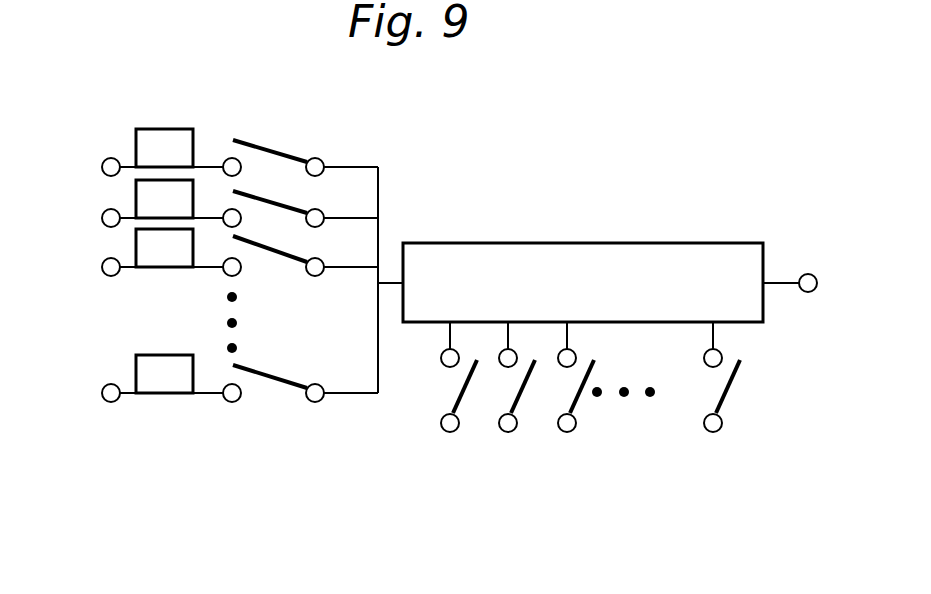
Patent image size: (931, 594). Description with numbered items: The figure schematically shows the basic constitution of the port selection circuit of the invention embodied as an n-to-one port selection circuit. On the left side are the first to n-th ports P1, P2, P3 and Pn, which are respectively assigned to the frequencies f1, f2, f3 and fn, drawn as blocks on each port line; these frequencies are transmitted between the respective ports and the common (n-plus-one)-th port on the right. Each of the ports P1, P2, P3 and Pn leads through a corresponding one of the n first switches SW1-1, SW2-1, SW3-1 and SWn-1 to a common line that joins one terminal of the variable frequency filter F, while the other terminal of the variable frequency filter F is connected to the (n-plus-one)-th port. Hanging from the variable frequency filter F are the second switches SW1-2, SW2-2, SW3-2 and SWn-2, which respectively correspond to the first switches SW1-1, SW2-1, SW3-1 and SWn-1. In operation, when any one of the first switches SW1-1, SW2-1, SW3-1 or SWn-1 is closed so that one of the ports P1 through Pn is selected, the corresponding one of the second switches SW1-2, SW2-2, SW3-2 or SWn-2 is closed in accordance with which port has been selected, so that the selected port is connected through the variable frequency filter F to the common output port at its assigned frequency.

The first port P1 is at (102, 167).
The second port P2 is at (102, 218).
The third port P3 is at (102, 267).
The n-th port Pn is at (102, 393).
The frequency assigned to first port f1 is at (164, 148).
The frequency assigned to second port f2 is at (164, 199).
The frequency assigned to third port f3 is at (164, 248).
The frequency assigned to n-th port fn is at (164, 374).
The first switch SW1-1 is at (247, 141).
The first switch SW2-1 is at (250, 192).
The first switch SW3-1 is at (280, 253).
The first switch SWn-1 is at (258, 368).
The variable frequency filter F is at (543, 243).
The second switch SW1-2 is at (463, 403).
The second switch SW2-2 is at (517, 403).
The second switch SW3-2 is at (577, 404).
The second switch SWn-2 is at (728, 388).